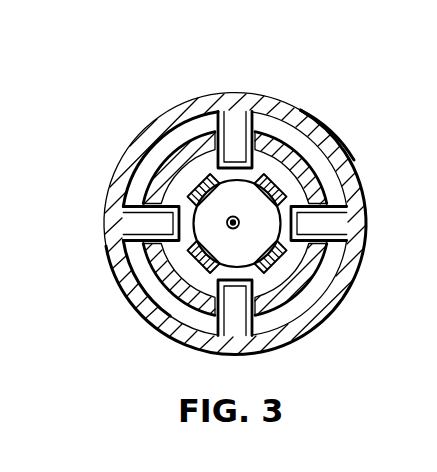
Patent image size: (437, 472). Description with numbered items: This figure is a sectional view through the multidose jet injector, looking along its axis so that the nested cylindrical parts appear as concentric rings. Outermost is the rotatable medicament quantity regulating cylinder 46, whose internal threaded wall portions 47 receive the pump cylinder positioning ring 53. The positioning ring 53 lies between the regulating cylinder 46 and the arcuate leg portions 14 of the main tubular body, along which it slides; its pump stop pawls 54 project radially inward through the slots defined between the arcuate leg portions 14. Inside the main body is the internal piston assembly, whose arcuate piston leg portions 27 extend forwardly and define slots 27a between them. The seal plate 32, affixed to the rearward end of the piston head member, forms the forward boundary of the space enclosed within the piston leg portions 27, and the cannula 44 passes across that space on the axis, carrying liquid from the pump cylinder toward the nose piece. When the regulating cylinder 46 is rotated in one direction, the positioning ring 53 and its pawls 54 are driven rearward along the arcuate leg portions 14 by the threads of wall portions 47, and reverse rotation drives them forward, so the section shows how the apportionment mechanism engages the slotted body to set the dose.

The arcuate leg portions 14 is at (166, 140).
The arcuate piston leg portions 27 is at (189, 127).
The slots 27a is at (157, 262).
The seal plate 32 is at (237, 223).
The cannula 44 is at (231, 221).
The medicament quantity regulating cylinder 46 is at (197, 177).
The internal threaded wall portions 47 is at (350, 166).
The pump cylinder positioning ring 53 is at (126, 186).
The pump stop pawls 54 is at (158, 220).